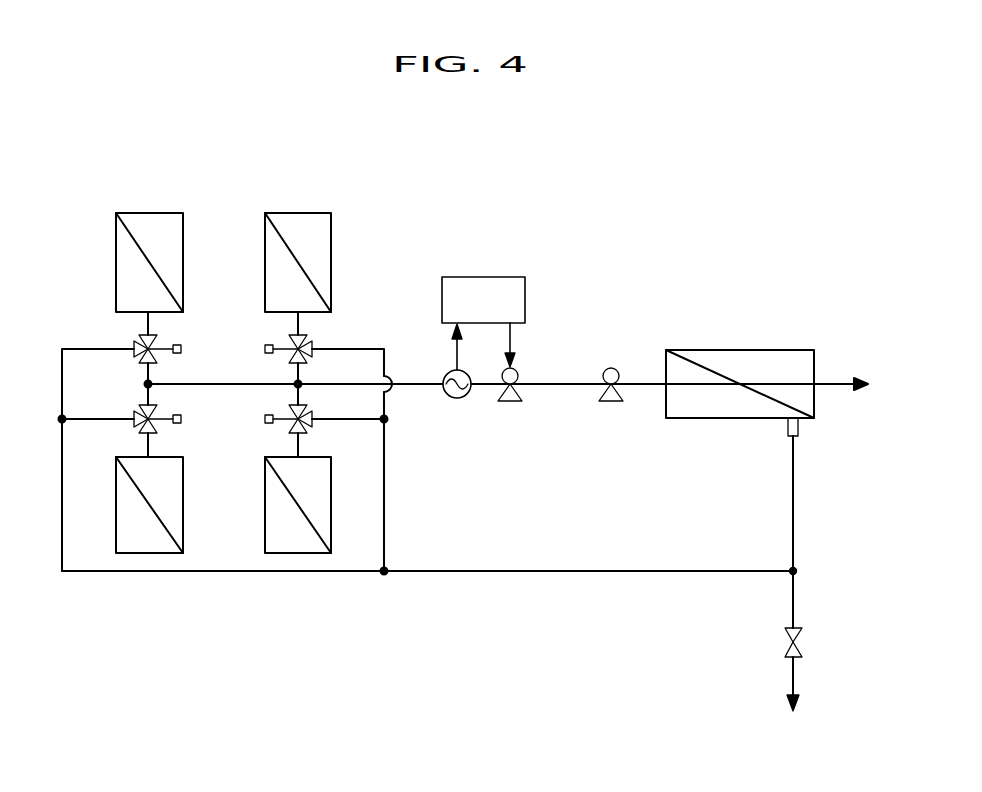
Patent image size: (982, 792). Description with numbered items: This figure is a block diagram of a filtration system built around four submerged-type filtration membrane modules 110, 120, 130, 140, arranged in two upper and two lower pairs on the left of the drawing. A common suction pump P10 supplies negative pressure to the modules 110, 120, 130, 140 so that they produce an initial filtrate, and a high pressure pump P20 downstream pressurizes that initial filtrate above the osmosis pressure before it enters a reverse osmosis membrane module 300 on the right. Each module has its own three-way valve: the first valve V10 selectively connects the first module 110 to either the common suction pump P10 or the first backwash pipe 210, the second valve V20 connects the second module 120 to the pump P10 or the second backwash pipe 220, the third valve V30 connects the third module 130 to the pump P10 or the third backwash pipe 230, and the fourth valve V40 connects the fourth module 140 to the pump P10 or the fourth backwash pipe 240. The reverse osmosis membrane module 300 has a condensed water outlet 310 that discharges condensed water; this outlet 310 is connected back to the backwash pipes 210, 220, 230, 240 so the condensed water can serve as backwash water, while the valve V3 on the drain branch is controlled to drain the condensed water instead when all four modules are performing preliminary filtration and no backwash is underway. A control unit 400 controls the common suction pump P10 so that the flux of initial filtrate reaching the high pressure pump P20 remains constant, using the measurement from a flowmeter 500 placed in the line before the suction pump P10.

The first submerged-type filtration membrane module 110 is at (165, 212).
The second submerged-type filtration membrane module 120 is at (312, 212).
The third submerged-type filtration membrane module 130 is at (133, 556).
The fourth submerged-type filtration membrane module 140 is at (282, 556).
The first backwash pipe 210 is at (88, 348).
The second backwash pipe 220 is at (365, 348).
The third backwash pipe 230 is at (88, 424).
The fourth backwash pipe 240 is at (361, 423).
The reverse osmosis membrane module 300 is at (782, 348).
The condensed water outlet 310 is at (800, 428).
The control unit 400 is at (500, 276).
The flowmeter 500 is at (455, 399).
The first valve V10 is at (182, 354).
The second valve V20 is at (264, 347).
The third valve V30 is at (182, 424).
The fourth valve V40 is at (264, 417).
The common suction pump P10 is at (511, 401).
The high pressure pump P20 is at (612, 401).
The valve V3 is at (809, 669).